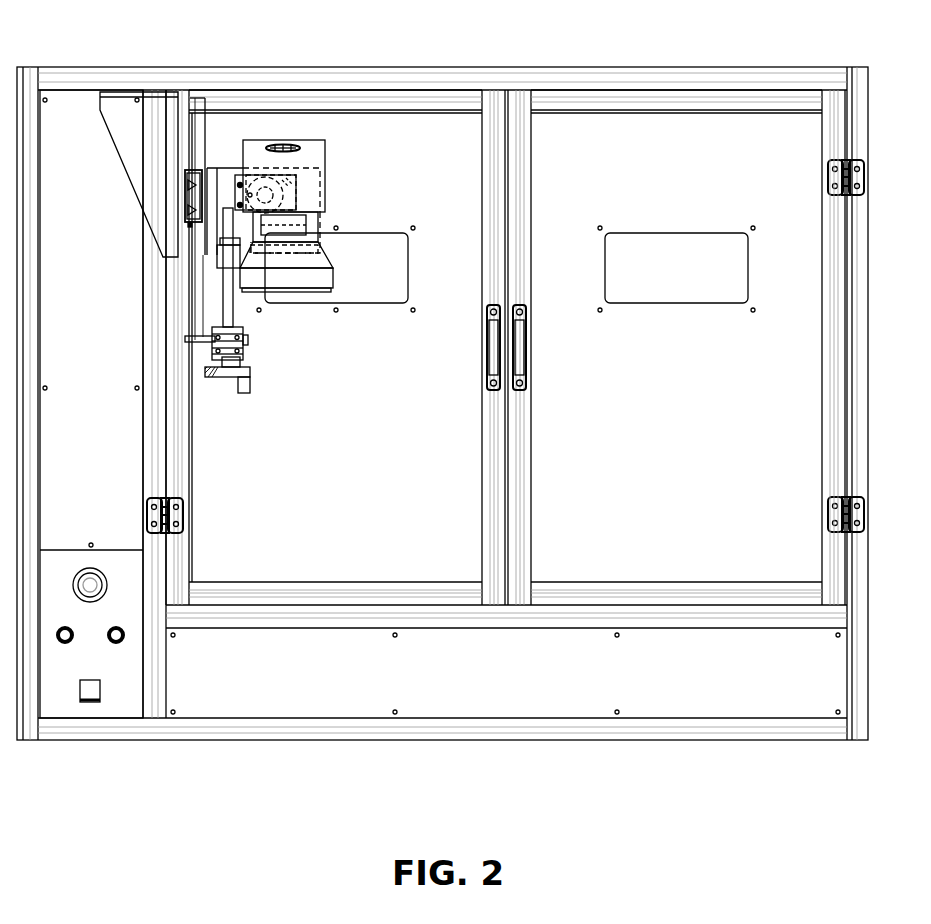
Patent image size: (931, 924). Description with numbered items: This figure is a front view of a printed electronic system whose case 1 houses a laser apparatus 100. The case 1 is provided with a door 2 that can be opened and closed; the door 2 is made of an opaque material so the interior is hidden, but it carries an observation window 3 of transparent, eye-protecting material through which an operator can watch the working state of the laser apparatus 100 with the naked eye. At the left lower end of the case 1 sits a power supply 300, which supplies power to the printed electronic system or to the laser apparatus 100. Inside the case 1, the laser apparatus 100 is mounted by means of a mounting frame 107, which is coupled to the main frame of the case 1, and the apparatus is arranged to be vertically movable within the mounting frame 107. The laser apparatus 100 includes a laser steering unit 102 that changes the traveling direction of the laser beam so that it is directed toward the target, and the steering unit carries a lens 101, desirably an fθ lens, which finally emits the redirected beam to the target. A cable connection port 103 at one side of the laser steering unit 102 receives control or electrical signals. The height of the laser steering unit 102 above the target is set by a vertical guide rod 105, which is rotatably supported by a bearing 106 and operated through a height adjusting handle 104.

The case 1 is at (807, 68).
The door 2 is at (727, 143).
The observation window 3 is at (660, 245).
The laser apparatus 100 is at (262, 226).
The lens 101 is at (332, 272).
The laser steering unit 102 is at (315, 140).
The cable connection port 103 is at (275, 140).
The height adjusting handle 104 is at (227, 377).
The vertical guide rod 105 is at (227, 310).
The bearing 106 is at (248, 338).
The mounting frame 107 is at (148, 135).
The power supply 300 is at (118, 690).